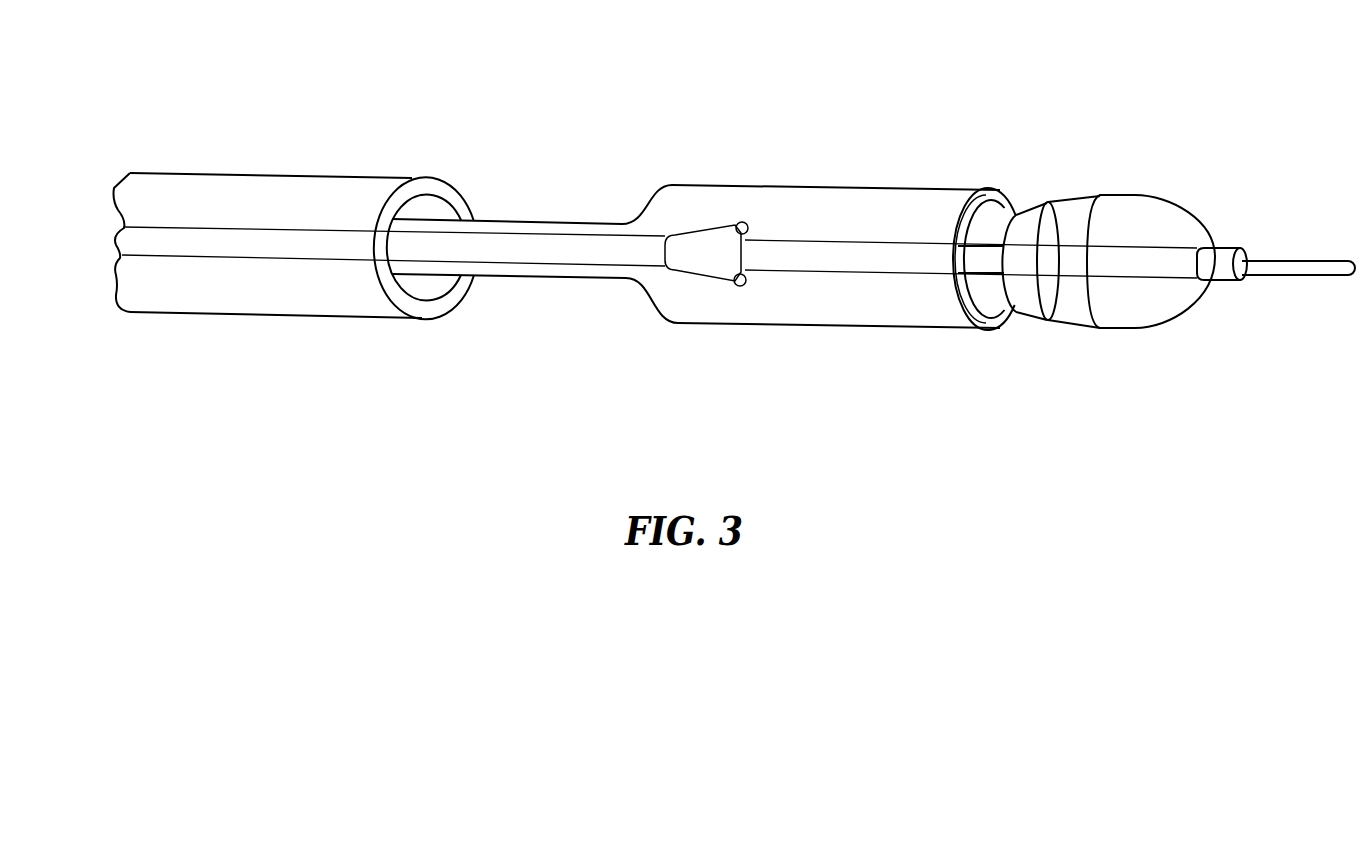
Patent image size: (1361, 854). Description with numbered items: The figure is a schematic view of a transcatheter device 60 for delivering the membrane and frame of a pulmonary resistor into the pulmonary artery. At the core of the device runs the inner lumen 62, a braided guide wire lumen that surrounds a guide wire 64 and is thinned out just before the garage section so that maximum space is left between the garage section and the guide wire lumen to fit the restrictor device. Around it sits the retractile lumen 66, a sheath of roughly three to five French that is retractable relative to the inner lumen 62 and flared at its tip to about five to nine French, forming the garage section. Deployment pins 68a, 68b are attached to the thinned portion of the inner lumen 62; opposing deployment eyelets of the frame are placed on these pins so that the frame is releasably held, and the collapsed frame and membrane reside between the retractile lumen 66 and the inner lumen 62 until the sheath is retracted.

The transcatheter device 60 is at (266, 99).
The inner lumen 62 is at (546, 278).
The guidewire 64 is at (1317, 260).
The retractile lumen 66 is at (214, 297).
The pin 68a is at (744, 222).
The pin 68b is at (740, 287).